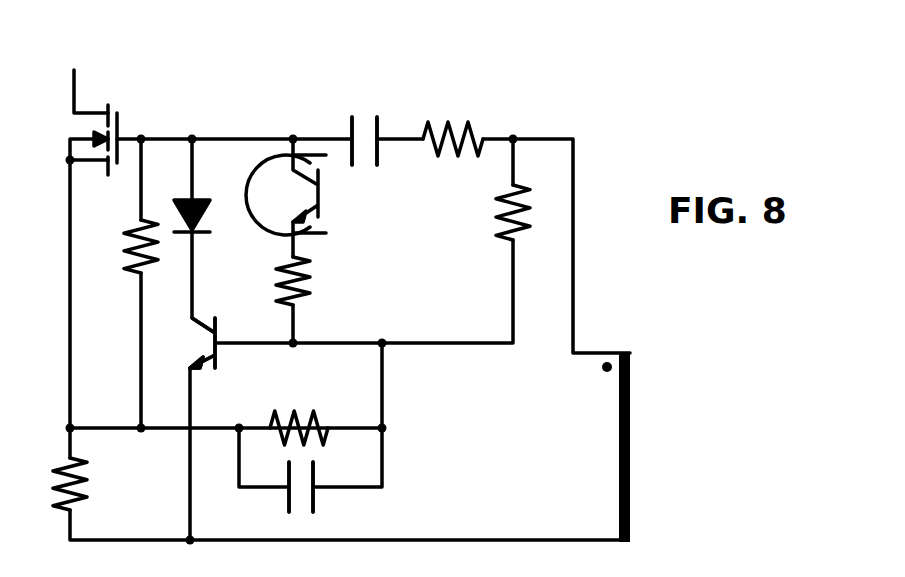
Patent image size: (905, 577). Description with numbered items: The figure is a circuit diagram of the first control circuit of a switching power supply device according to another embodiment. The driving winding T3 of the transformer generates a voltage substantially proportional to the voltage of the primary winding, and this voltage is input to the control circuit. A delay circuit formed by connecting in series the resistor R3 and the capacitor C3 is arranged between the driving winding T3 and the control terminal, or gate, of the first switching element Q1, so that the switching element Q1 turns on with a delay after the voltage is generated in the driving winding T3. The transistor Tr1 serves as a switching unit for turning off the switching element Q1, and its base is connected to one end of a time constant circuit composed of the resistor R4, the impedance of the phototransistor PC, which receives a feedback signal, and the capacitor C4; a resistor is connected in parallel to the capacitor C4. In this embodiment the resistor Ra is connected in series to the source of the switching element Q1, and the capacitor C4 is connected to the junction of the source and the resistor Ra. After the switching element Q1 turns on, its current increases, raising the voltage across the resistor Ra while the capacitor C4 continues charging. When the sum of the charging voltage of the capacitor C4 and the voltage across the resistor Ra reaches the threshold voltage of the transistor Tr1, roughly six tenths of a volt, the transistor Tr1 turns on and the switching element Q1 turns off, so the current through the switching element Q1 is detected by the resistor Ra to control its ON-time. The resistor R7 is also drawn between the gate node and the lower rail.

The first switching element Q1 is at (98, 111).
The photocoupler PC is at (269, 241).
The capacitor C3 is at (361, 126).
The resistor R3 is at (453, 125).
The resistor R4 is at (491, 212).
The resistor R7 is at (127, 259).
The transistor Tr1 is at (215, 331).
The driving winding T3 is at (605, 447).
The resistor Ra is at (48, 484).
The capacitor C4 is at (314, 468).